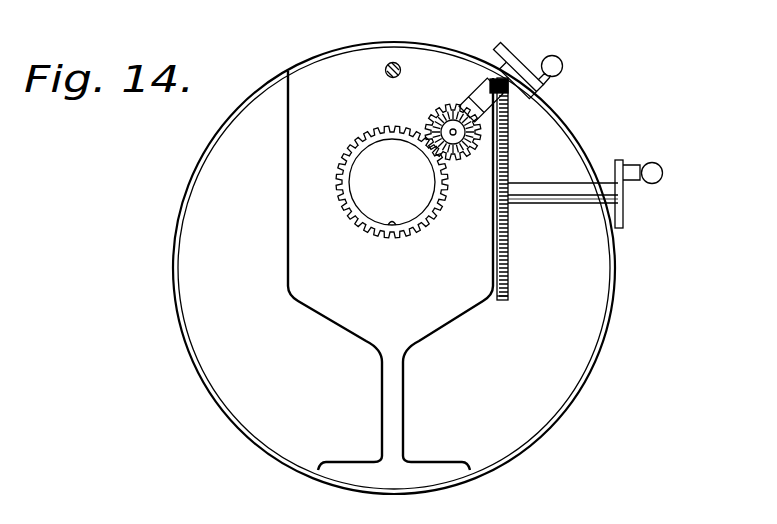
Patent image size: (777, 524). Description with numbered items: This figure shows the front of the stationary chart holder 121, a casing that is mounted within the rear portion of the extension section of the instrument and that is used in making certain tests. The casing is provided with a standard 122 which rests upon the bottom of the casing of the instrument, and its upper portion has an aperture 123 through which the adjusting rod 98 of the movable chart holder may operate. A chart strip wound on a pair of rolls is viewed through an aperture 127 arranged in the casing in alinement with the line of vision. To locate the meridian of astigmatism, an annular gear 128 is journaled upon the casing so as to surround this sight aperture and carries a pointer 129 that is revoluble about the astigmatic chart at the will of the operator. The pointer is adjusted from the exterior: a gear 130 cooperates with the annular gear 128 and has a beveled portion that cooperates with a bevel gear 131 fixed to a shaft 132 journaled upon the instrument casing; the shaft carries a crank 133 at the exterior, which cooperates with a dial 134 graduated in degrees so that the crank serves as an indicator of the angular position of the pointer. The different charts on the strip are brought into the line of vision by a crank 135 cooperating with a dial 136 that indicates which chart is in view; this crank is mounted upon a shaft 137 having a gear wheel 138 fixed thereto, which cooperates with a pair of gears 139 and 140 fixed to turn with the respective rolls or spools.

The adjusting rod 98 is at (392, 62).
The stationary chart holder 121 is at (390, 270).
The standard 122 is at (381, 392).
The aperture 123 is at (396, 62).
The aperture 127 is at (352, 199).
The annular gear 128 is at (408, 137).
The pointer 129 is at (391, 226).
The gear 130 is at (447, 110).
The bevel gear 131 is at (509, 152).
The shaft 132 is at (506, 92).
The crank 133 is at (563, 70).
The dial 134 is at (505, 54).
The crank 135 is at (660, 166).
The dial 136 is at (624, 215).
The shaft 137 is at (566, 198).
The gear wheel 138 is at (510, 184).
The gear 139 is at (509, 110).
The gear 140 is at (510, 273).